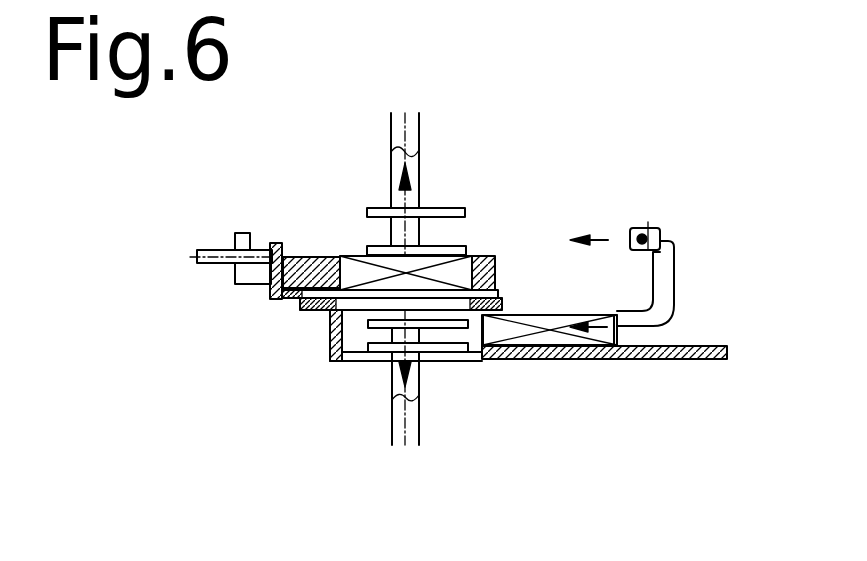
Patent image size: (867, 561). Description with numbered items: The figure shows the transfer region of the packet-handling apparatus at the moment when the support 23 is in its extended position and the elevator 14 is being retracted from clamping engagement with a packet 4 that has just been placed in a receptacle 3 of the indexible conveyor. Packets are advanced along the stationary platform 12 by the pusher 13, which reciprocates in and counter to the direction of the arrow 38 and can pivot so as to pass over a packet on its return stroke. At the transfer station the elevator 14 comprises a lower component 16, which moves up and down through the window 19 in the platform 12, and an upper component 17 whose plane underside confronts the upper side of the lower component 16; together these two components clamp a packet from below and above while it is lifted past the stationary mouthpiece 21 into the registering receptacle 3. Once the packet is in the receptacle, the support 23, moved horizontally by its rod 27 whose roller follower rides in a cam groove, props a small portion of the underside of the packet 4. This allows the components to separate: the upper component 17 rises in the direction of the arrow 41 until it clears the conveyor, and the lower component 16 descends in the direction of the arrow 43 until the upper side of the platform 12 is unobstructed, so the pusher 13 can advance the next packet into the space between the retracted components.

The receptacle 3 is at (497, 258).
The packet 4 is at (375, 273).
The stationary platform 12 is at (547, 362).
The pusher 13 is at (667, 265).
The elevator 14 is at (382, 387).
The lower component 16 is at (420, 433).
The upper component 17 is at (463, 207).
The window 19 is at (353, 362).
The mouthpiece 21 is at (310, 312).
The support 23 is at (268, 297).
The rod 27 is at (212, 255).
The arrow 38 is at (622, 362).
The arrow 41 is at (407, 180).
The arrow 43 is at (407, 365).